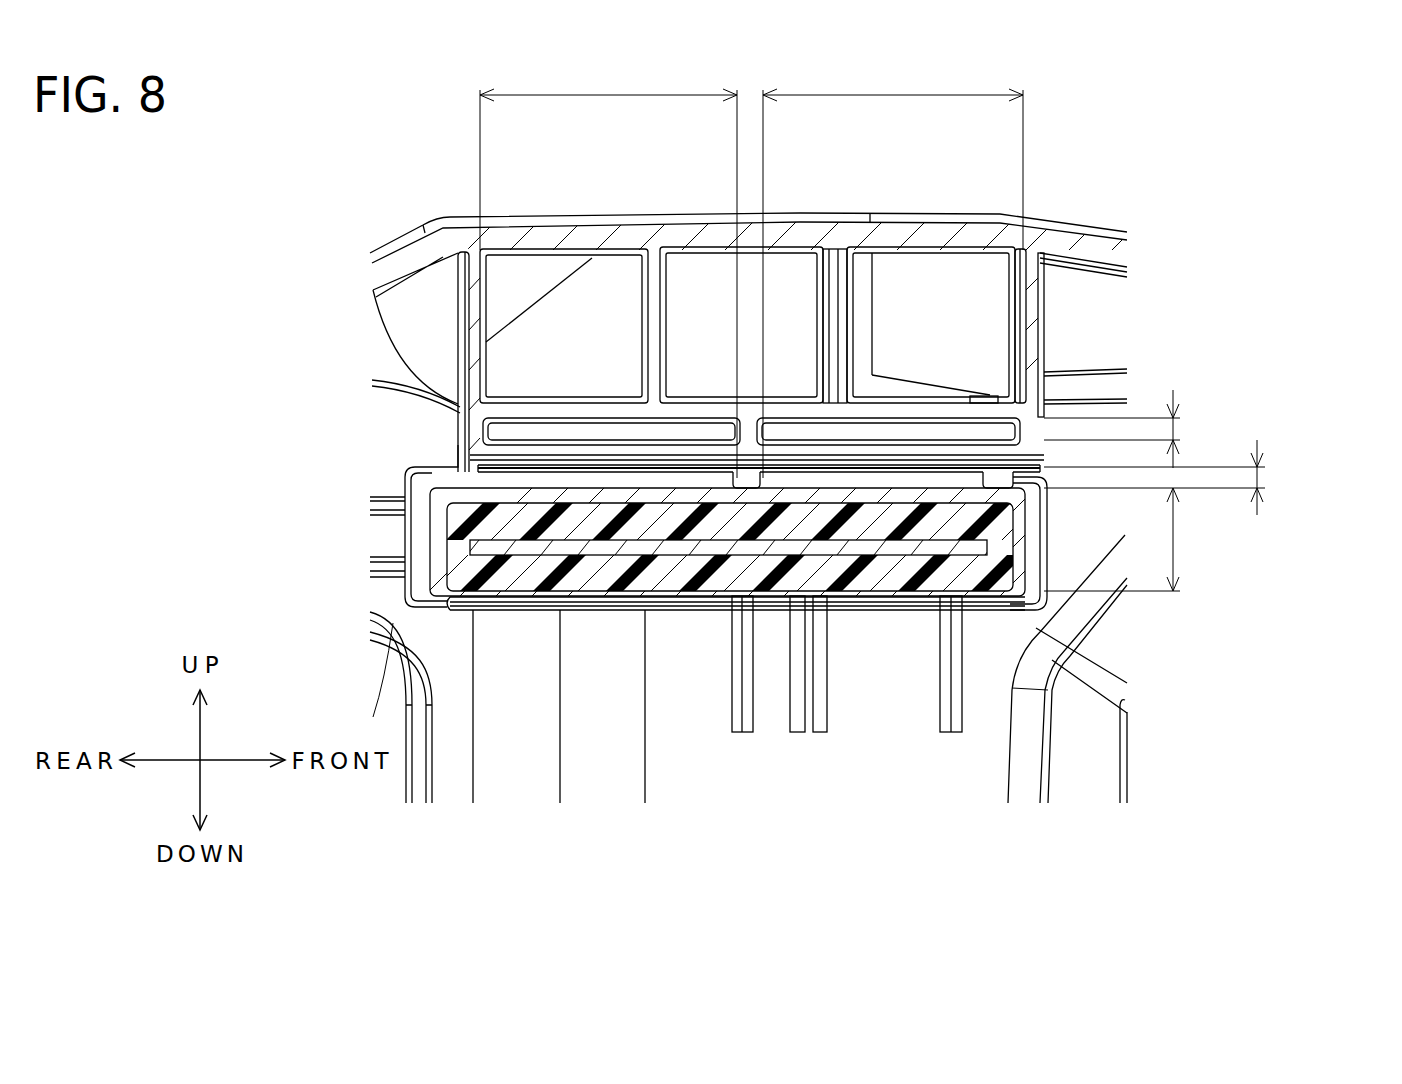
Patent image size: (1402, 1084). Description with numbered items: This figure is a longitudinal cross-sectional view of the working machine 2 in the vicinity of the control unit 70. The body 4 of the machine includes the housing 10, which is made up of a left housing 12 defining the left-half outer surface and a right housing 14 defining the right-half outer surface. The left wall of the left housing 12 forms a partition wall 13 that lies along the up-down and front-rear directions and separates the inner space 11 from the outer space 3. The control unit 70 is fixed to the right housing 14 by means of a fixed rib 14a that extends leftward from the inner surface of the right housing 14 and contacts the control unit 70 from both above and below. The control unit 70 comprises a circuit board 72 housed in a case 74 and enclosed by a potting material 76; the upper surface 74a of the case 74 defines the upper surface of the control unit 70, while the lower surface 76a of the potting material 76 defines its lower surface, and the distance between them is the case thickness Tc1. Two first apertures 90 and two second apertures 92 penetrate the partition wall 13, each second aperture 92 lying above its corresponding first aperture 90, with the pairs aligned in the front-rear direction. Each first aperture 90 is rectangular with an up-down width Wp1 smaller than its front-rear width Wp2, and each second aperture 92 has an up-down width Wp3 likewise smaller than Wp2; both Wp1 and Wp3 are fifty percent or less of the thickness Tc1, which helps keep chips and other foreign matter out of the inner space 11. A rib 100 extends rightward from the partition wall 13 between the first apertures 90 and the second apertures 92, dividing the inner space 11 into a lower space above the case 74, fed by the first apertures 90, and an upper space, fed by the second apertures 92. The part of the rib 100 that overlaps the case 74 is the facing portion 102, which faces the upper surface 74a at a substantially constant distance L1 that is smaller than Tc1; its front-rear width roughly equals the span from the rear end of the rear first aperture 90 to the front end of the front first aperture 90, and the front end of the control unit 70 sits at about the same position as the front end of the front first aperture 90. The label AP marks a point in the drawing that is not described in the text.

The working machine 2 is at (300, 250).
The outer space 3 is at (368, 215).
The body 4 is at (1125, 215).
The housing 10 is at (1050, 243).
The inner space 11 is at (1093, 415).
The left housing 12 is at (410, 337).
The partition wall 13 is at (448, 395).
The right housing 14 is at (1087, 248).
The fixed rib 14a is at (405, 540).
The control unit 70 is at (800, 667).
The circuit board 72 is at (887, 552).
The case 74 is at (862, 498).
The upper surface of the case 74a is at (935, 498).
The potting material 76 is at (735, 679).
The lower surface of the potting material 76a is at (673, 600).
The first apertures 90 is at (835, 492).
The second apertures 92 is at (700, 430).
The rib 100 is at (562, 478).
The facing portion 102 is at (620, 470).
The attachment point AP is at (896, 485).
The width of the apertures in the front-rear direction Wp2 is at (751, 266).
The width of the second aperture in the up-down direction Wp3 is at (1145, 429).
The width of the first aperture in the up-down direction Wp1 is at (1209, 477).
The distance between the facing portion and the upper surface of the case L1 is at (1361, 481).
The thickness of the case in the up-down direction Tc1 is at (1137, 539).